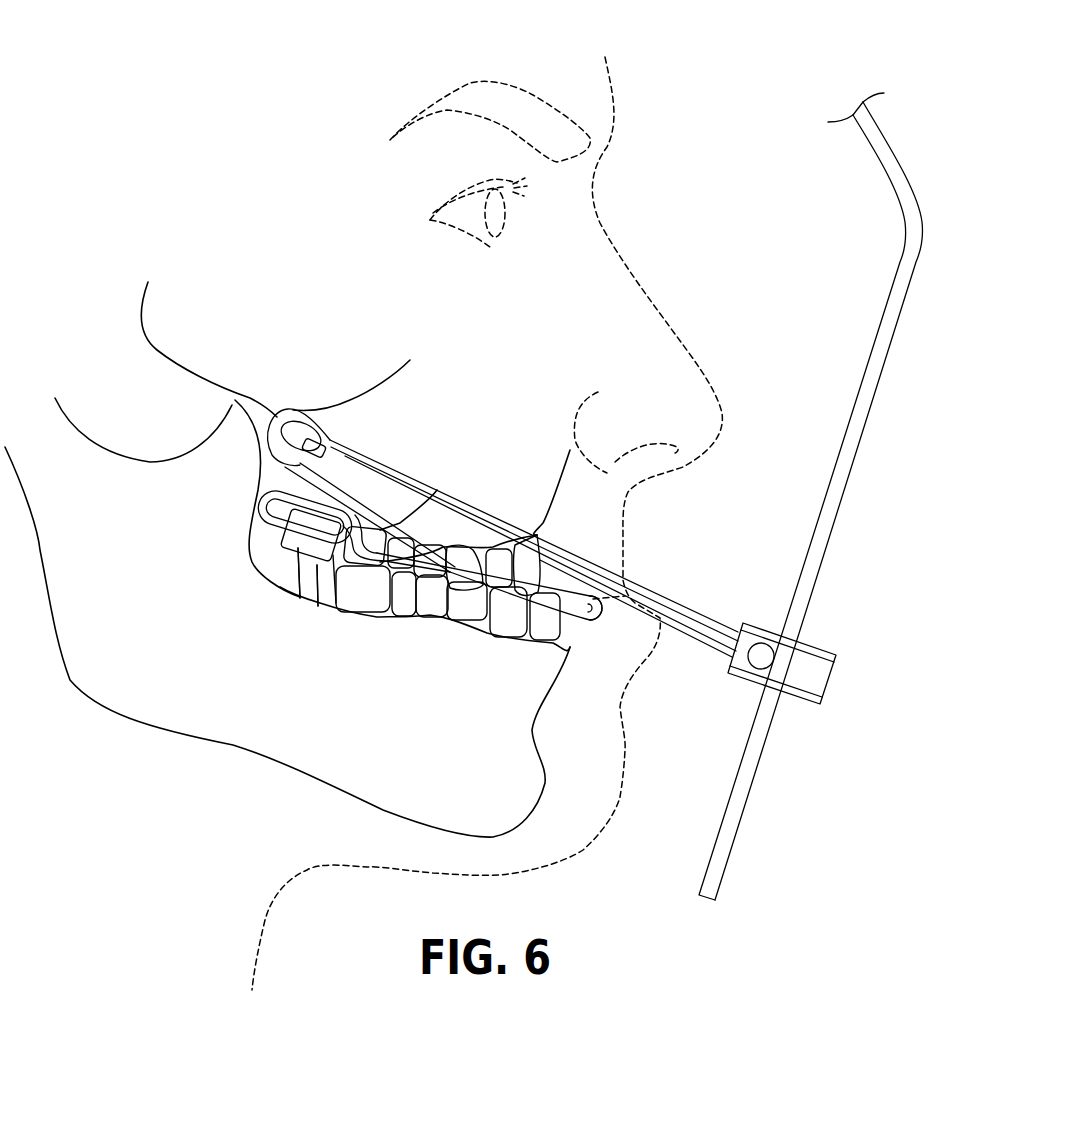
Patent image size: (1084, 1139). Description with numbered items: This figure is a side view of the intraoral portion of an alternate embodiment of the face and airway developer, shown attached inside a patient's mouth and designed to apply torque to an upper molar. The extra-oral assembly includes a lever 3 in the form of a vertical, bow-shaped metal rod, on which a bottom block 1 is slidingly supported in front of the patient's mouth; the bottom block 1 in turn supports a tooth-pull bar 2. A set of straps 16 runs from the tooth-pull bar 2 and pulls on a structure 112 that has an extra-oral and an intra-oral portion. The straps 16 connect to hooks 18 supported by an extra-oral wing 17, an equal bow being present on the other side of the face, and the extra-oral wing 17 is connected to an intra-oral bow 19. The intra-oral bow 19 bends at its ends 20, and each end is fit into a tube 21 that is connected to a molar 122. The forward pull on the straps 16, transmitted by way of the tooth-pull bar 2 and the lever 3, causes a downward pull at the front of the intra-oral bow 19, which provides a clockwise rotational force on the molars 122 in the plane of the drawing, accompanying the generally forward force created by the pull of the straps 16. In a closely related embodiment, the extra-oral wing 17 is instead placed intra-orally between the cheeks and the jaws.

The bottom block 1 is at (831, 674).
The tooth-pull bar 2 is at (760, 641).
The lever 3 is at (839, 455).
The straps 16 is at (672, 597).
The extra-oral wing 17 is at (432, 487).
The hooks 18 is at (336, 436).
The intra-oral bow 19 is at (430, 612).
The ends of bow 20 is at (255, 540).
The tube 21 is at (295, 598).
The structure 112 is at (596, 624).
The molar 122 is at (321, 606).